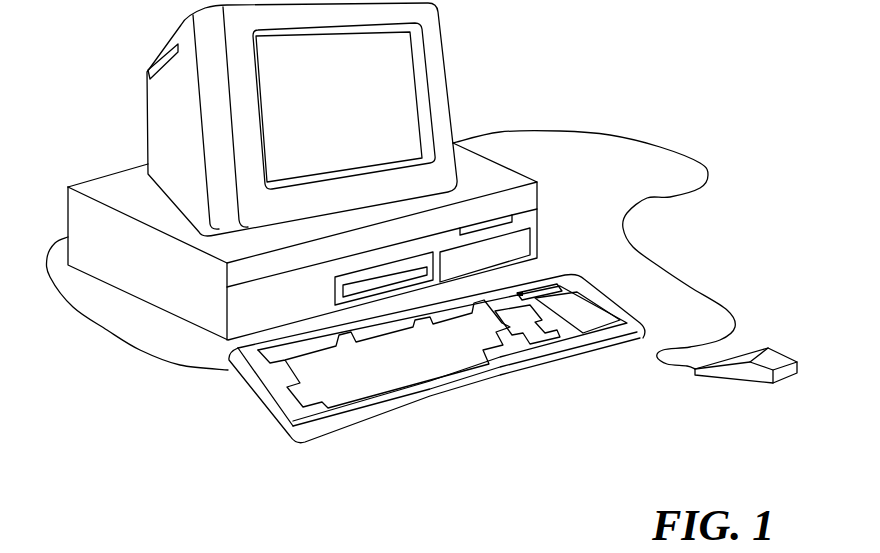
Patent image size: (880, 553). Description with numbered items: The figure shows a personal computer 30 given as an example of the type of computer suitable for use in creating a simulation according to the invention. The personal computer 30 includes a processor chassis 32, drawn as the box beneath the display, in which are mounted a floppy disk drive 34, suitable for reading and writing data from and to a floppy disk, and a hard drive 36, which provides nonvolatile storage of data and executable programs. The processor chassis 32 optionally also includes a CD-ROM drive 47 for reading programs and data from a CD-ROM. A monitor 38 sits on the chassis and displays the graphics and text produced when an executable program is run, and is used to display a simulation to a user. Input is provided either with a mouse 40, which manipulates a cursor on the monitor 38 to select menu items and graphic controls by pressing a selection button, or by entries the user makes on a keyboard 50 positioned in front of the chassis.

The personal computer 30 is at (448, 411).
The processor chassis 32 is at (520, 219).
The floppy disk drive 34 is at (487, 218).
The hard drive 36 is at (507, 247).
The monitor 38 is at (445, 62).
The mouse 40 is at (775, 384).
The CD-ROM drive 47 is at (335, 300).
The keyboard 50 is at (531, 373).